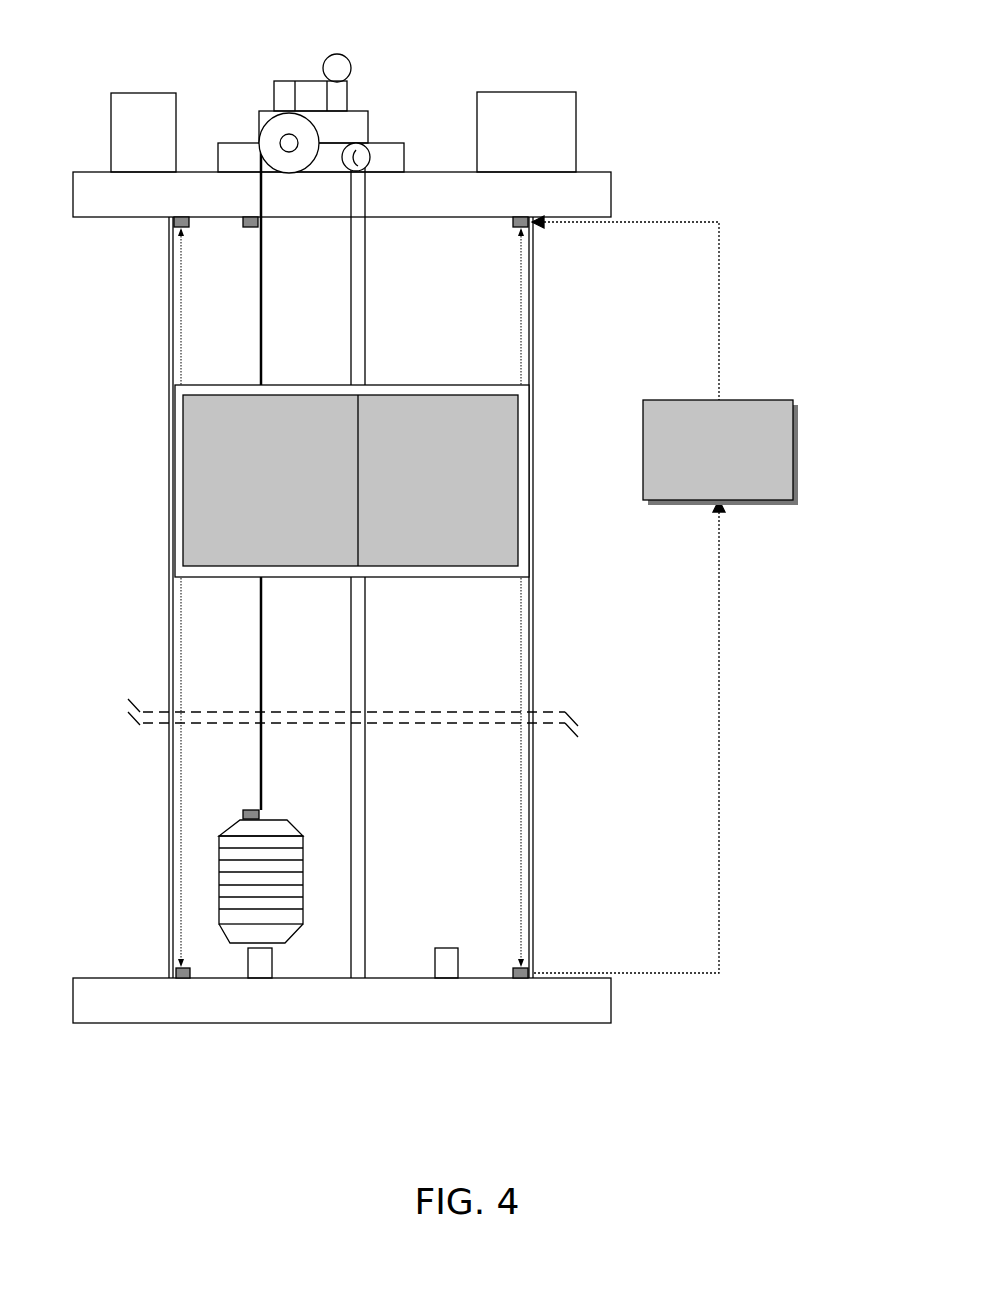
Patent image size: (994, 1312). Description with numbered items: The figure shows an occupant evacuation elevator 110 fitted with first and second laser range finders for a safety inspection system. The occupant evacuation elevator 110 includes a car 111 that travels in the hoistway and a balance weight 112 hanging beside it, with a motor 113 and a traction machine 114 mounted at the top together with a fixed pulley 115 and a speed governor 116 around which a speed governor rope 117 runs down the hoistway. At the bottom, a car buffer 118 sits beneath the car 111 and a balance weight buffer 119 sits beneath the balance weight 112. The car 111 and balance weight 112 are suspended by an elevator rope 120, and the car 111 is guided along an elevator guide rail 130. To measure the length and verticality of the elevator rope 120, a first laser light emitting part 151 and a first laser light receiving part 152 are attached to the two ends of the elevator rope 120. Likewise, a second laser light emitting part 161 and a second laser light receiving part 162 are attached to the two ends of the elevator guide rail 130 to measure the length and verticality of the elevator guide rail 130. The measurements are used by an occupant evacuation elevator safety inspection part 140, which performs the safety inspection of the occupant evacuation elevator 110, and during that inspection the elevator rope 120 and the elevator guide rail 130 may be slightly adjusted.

The occupant evacuation elevator 110 is at (540, 62).
The car 111 is at (193, 492).
The balance weight 112 is at (222, 862).
The motor 113 is at (326, 56).
The traction machine 114 is at (345, 100).
The fixed pulley 115 is at (275, 124).
The speed governor 116 is at (366, 150).
The speed governor rope 117 is at (367, 318).
The car buffer 118 is at (452, 953).
The balance weight buffer 119 is at (249, 966).
The elevator rope 120 is at (263, 362).
The elevator guide rail 130 is at (168, 360).
The occupant evacuation elevator safety inspection part 140 is at (643, 428).
The first laser light emitting part 151 is at (246, 230).
The first laser light receiving part 152 is at (245, 810).
The second laser light emitting part 161 is at (180, 230).
The second laser light receiving part 162 is at (176, 967).